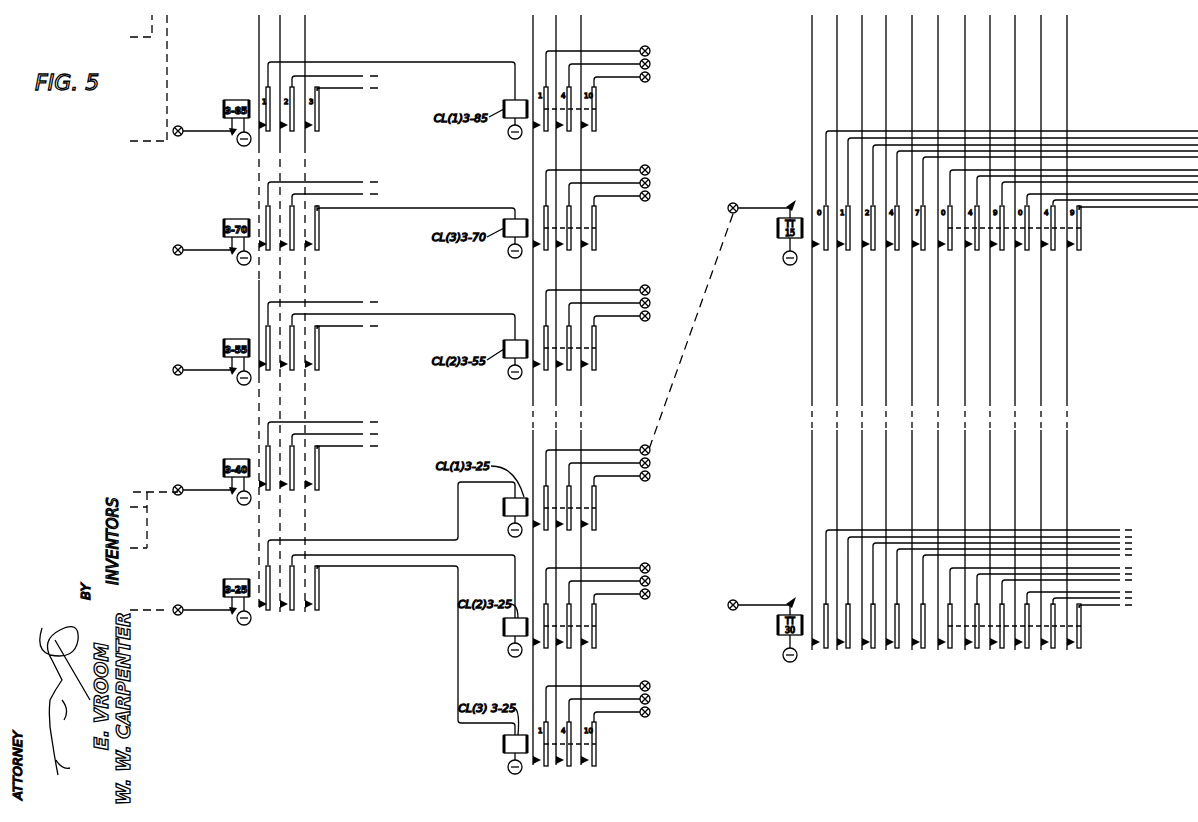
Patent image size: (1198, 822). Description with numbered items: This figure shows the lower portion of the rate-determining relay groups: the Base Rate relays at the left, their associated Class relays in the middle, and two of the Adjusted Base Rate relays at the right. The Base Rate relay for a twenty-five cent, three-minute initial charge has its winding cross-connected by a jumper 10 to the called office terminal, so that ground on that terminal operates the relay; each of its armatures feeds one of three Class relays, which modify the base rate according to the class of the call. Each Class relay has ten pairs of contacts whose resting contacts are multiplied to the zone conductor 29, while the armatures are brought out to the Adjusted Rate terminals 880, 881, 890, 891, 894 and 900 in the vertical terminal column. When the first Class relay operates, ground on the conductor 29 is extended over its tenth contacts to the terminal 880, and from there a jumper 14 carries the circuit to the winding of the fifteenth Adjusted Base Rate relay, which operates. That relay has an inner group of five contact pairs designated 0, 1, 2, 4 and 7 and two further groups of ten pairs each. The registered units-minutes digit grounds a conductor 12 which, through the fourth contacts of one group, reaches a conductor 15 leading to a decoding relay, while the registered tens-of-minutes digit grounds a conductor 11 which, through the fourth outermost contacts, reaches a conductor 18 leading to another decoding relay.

The conductor 29 is at (581, 33).
The conductor 12 is at (965, 66).
The conductor 11 is at (1041, 66).
The conductor 15 is at (1093, 176).
The conductor 18 is at (1138, 201).
The jumper 14 is at (698, 346).
The jumper 10 is at (133, 612).
The contact pair designation 7 is at (912, 330).
The contact pair designation 0 is at (812, 64).
The contact pair designation 1 is at (837, 64).
The contact pair designation 2 is at (862, 50).
The contact pair designation 4 is at (886, 50).
The Adjusted Rate terminal 880 is at (608, 487).
The Adjusted Rate terminal 881 is at (608, 604).
The Adjusted Rate terminal 890 is at (608, 605).
The Adjusted Rate terminal 891 is at (616, 723).
The Adjusted Rate terminal 894 is at (616, 723).
The Adjusted Rate terminal 900 is at (616, 723).